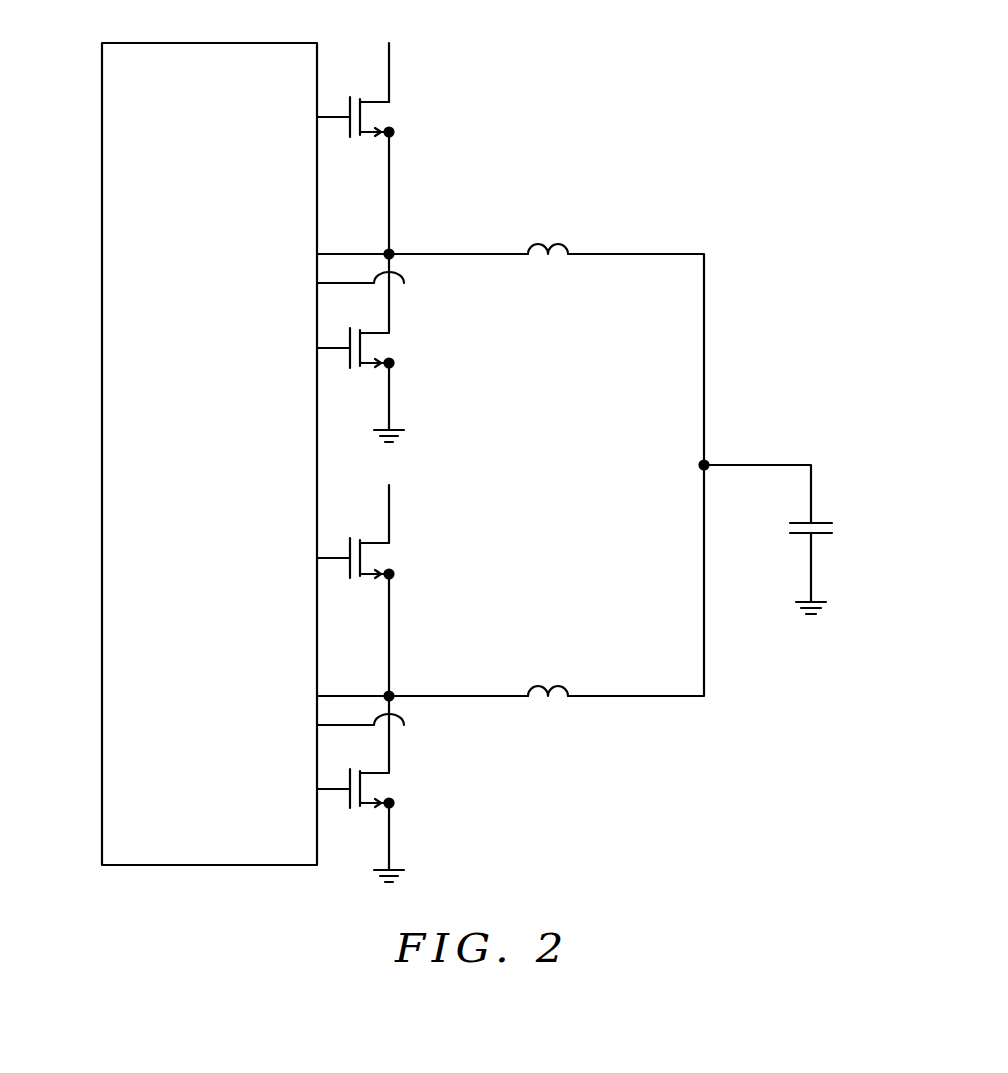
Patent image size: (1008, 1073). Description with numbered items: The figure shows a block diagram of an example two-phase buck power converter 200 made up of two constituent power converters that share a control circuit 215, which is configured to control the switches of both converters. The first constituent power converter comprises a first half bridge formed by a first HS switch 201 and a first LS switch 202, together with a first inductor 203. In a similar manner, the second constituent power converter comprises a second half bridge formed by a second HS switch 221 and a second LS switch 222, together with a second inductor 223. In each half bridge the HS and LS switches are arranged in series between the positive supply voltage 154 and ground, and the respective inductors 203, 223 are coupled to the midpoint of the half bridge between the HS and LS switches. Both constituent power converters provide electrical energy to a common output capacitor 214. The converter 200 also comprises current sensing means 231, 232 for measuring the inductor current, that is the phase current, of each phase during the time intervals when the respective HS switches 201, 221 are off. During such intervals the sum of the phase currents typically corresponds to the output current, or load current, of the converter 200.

The two-phase buck power converter 200 is at (466, 458).
The supply voltage 154 is at (400, 47).
The first HS switch 201 is at (405, 118).
The first LS switch 202 is at (405, 349).
The first inductor 203 is at (549, 241).
The output capacitor 214 is at (835, 528).
The control circuit 215 is at (102, 331).
The second HS switch 221 is at (405, 559).
The second LS switch 222 is at (405, 789).
The second inductor 223 is at (547, 681).
The current sensing means 231 is at (407, 290).
The current sensing means 232 is at (407, 731).